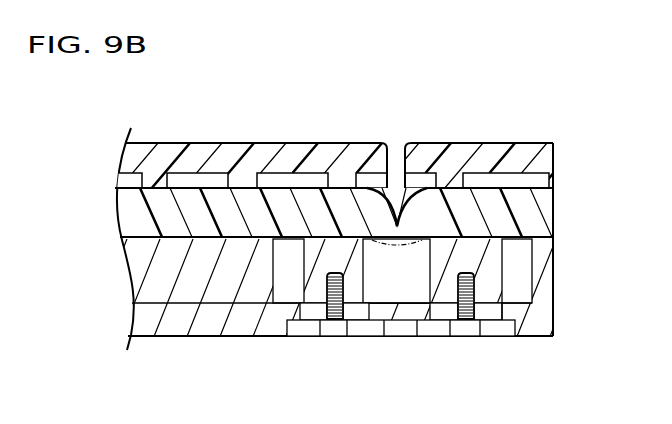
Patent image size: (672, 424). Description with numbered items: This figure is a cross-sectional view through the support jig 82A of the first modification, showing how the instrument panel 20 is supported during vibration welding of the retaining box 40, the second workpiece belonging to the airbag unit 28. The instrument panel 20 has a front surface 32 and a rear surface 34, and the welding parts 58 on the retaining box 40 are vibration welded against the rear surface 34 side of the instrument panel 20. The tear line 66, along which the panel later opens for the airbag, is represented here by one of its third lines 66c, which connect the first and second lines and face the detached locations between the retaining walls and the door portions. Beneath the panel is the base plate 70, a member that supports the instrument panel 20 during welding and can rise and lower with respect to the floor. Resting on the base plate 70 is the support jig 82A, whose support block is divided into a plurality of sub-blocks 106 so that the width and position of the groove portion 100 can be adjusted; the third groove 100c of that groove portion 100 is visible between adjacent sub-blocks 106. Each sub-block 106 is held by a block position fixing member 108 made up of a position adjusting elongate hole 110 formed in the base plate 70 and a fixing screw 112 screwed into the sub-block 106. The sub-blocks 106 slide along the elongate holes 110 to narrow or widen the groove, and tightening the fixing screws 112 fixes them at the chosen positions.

The instrument panel 20 is at (104, 210).
The airbag unit 28 is at (267, 134).
The front surface 32 is at (160, 232).
The rear surface 34 is at (192, 186).
The retaining box 40 is at (339, 132).
The welding parts 58 is at (491, 174).
The tear line 66 is at (416, 150).
The third lines 66c is at (394, 205).
The base plate 70 is at (537, 311).
The support jig 82A is at (334, 261).
The groove portion 100 is at (399, 283).
The third groove 100c is at (408, 321).
The sub-blocks 106 is at (348, 247).
The block position fixing members 108 is at (394, 348).
The position adjusting elongate holes 110 is at (369, 384).
The fixing screws 112 is at (333, 322).